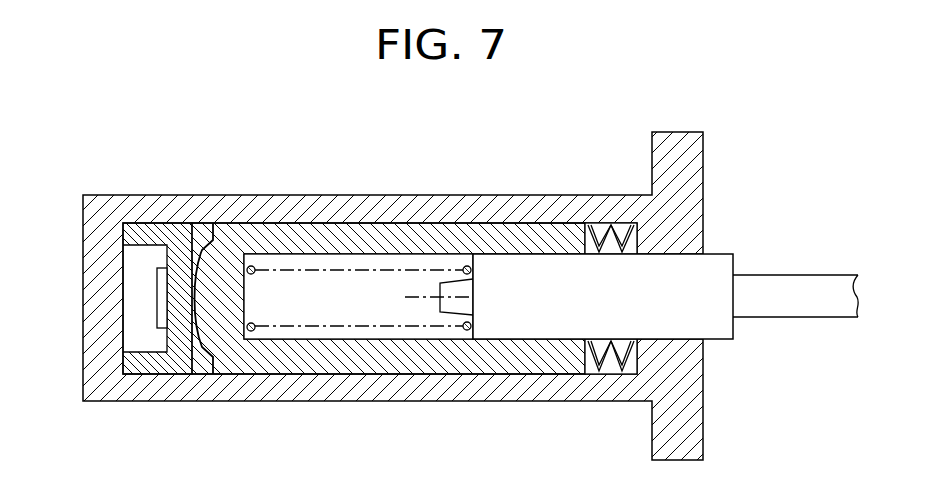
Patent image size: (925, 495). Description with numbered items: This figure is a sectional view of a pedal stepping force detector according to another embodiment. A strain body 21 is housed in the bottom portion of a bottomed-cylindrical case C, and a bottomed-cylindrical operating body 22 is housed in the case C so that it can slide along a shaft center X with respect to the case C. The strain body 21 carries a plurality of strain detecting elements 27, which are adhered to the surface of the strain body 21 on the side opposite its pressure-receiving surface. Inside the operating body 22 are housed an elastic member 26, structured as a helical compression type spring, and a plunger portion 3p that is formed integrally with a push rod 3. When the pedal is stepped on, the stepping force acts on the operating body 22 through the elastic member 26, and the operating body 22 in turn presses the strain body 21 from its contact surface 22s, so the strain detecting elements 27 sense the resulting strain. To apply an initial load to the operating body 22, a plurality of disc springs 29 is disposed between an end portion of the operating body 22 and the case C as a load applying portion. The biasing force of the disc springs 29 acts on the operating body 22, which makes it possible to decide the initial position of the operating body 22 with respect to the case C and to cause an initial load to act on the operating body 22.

The case C is at (420, 195).
The operating body 22 is at (302, 228).
The contact surface 22s is at (203, 260).
The strain detecting elements 27 is at (160, 292).
The strain body 21 is at (188, 352).
The elastic member 26 is at (395, 325).
The shaft center X is at (587, 297).
The disc springs 29 is at (613, 230).
The plunger portion 3p is at (718, 333).
The push rod 3 is at (786, 278).